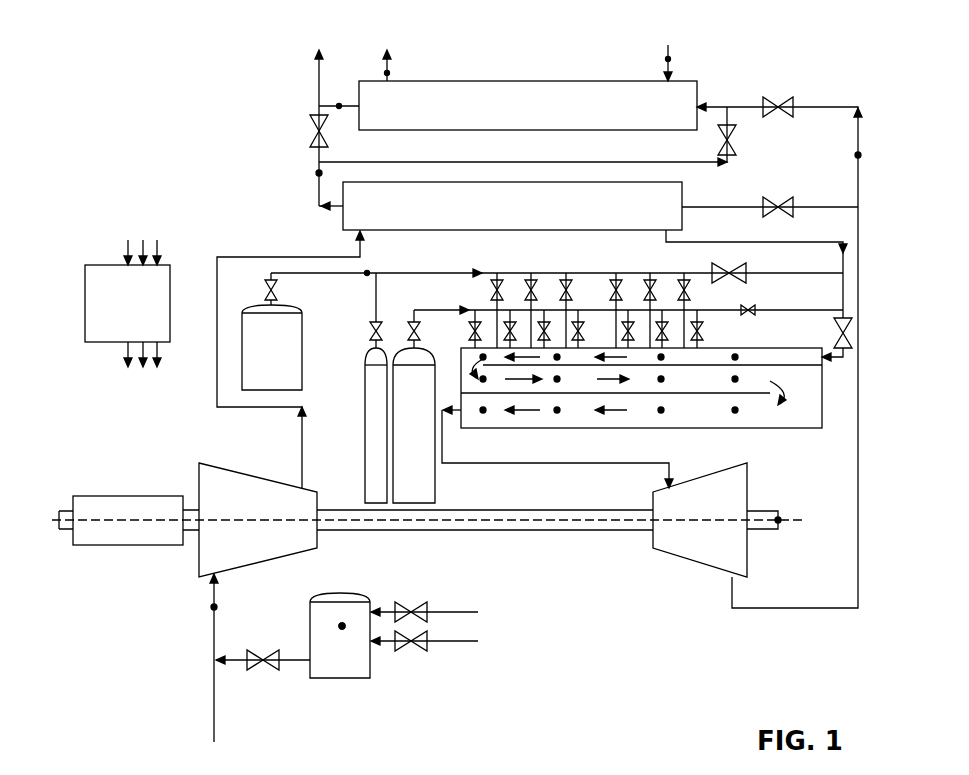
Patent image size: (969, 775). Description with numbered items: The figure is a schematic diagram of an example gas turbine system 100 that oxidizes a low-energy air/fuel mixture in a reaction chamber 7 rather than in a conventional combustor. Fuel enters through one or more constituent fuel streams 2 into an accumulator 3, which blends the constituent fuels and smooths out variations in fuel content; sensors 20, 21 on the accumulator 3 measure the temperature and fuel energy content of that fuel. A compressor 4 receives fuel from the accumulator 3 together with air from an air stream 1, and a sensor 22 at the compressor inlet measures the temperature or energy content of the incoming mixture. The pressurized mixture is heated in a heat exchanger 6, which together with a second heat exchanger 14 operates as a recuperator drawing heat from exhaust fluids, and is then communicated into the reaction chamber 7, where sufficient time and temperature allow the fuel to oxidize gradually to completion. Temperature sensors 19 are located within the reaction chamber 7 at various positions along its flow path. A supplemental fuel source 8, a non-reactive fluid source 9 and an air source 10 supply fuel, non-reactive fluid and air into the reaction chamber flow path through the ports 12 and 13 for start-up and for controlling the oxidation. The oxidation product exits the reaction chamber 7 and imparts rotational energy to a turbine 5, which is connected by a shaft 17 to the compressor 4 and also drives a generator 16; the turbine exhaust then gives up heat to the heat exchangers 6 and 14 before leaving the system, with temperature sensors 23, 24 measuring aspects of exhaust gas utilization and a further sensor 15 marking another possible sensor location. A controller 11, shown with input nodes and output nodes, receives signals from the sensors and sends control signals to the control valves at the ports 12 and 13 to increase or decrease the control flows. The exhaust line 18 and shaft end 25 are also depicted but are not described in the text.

The gas turbine system 100 is at (165, 60).
The air stream 1 is at (214, 690).
The constituent fuel streams 2 is at (478, 612).
The accumulator 3 is at (350, 678).
The compressor 4 is at (268, 562).
The turbine 5 is at (688, 562).
The heat exchanger 6 is at (343, 213).
The reaction chamber 7 is at (790, 428).
The supplemental fuel source 8 is at (425, 493).
The non-reactive fluid source 9 is at (375, 470).
The air source 10 is at (302, 352).
The controller 11 is at (113, 265).
The ports 12 is at (661, 316).
The ports 13 is at (495, 272).
The heat exchanger 14 is at (535, 81).
The sensor 15 is at (387, 73).
The generator 16 is at (120, 496).
The shaft 17 is at (405, 530).
The exhaust line 18 is at (319, 85).
The temperature sensors 19 is at (661, 410).
The sensor 20 is at (342, 626).
The sensor 21 is at (342, 626).
The sensor 22 is at (214, 607).
The temperature sensor 23 is at (319, 173).
The temperature sensor 24 is at (668, 59).
The shaft end 25 is at (783, 513).